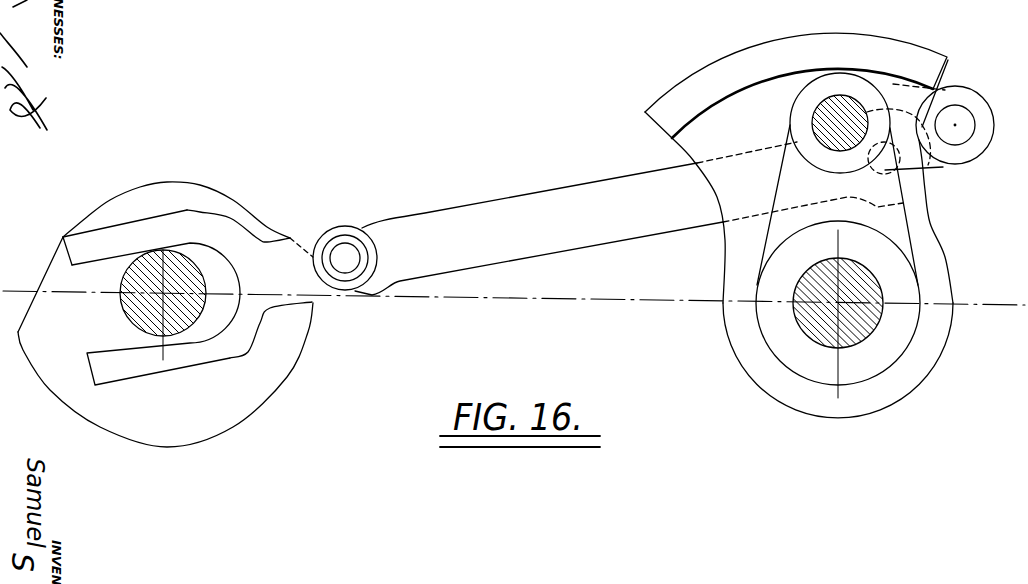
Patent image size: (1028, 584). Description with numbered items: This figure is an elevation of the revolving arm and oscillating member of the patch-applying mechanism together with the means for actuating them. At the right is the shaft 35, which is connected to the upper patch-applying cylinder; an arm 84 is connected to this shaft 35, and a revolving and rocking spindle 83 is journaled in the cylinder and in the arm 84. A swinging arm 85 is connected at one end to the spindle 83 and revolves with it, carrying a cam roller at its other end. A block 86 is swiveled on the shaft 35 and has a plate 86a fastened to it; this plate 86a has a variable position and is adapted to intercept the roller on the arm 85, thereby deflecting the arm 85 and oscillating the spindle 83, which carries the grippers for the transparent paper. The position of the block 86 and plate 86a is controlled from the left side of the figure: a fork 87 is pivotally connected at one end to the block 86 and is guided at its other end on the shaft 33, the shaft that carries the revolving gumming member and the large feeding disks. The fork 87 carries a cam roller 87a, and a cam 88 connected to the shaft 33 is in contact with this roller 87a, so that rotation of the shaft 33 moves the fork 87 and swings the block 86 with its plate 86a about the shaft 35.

The shaft 33 is at (140, 283).
The shaft 35 is at (843, 290).
The revolving and rocking spindle 83 is at (827, 123).
The arm 84 is at (788, 186).
The swinging arm 85 is at (965, 100).
The block 86 is at (940, 278).
The plate 86a is at (1012, 59).
The fork 87 is at (165, 250).
The cam roller 87a is at (352, 238).
The cam 88 is at (345, 345).